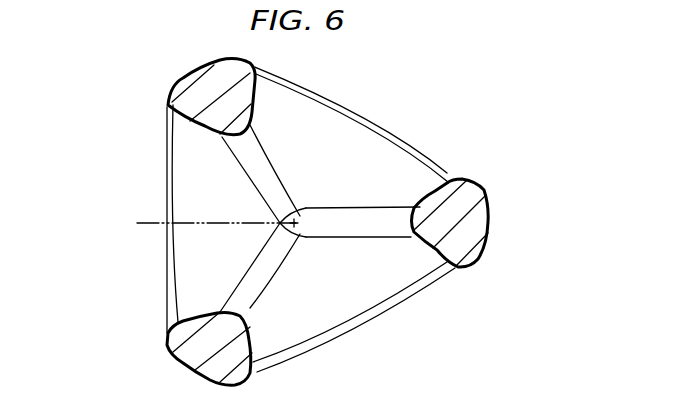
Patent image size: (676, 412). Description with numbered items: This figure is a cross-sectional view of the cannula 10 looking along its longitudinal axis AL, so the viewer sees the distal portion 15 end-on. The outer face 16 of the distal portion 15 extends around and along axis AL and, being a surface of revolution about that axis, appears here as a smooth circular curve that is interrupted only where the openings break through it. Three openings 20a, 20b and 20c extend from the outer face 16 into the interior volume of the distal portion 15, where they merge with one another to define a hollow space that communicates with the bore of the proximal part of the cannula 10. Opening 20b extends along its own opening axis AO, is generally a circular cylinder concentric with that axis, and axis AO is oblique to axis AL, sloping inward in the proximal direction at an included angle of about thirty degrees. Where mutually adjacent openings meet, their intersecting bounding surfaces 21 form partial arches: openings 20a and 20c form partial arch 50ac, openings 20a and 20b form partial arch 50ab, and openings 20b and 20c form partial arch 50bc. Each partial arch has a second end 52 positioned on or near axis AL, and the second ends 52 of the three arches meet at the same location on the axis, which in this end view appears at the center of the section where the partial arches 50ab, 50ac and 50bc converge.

The cannula 10 is at (138, 128).
The distal portion 15 is at (484, 211).
The outer face 16 is at (414, 298).
The opening 20a is at (350, 146).
The opening 20b is at (202, 199).
The opening 20c is at (372, 296).
The intersecting bounding surfaces 21 is at (448, 181).
The partial arch 50ab is at (256, 150).
The partial arch 50ac is at (377, 216).
The partial arch 50bc is at (255, 297).
The second end 52 is at (332, 205).
The longitudinal axis AL is at (362, 124).
The opening axis AO is at (147, 224).